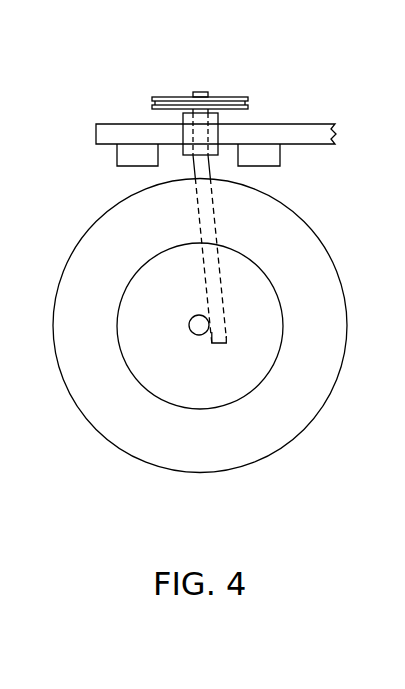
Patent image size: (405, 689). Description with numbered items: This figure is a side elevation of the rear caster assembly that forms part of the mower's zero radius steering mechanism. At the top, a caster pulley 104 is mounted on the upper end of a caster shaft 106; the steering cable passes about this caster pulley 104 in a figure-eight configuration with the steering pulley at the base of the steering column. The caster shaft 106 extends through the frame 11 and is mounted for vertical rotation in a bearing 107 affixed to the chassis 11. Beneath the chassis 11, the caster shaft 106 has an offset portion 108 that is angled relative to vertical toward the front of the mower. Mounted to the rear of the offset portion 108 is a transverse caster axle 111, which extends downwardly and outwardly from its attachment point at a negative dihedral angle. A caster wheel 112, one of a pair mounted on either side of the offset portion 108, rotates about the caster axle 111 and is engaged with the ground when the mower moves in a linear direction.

The frame 11 is at (293, 130).
The caster pulley 104 is at (170, 103).
The caster shaft 106 is at (199, 92).
The bearing 107 is at (183, 122).
The offset portion 108 is at (213, 227).
The caster axle 111 is at (189, 329).
The caster wheel 112 is at (158, 437).